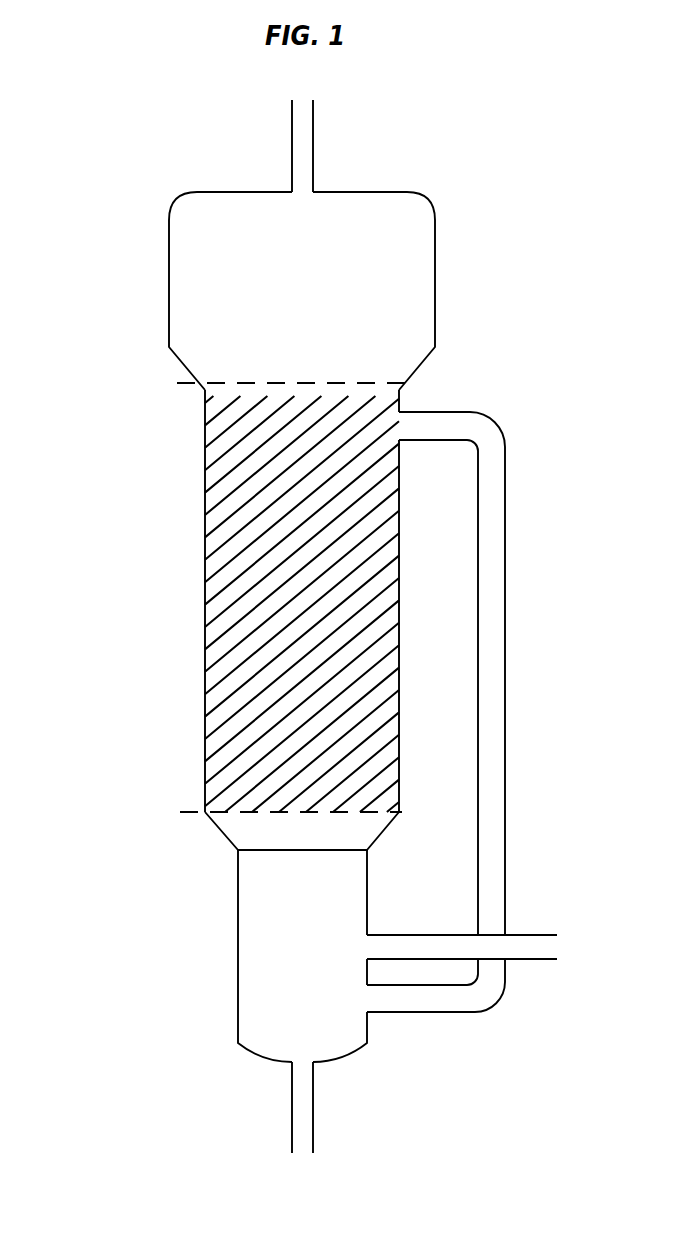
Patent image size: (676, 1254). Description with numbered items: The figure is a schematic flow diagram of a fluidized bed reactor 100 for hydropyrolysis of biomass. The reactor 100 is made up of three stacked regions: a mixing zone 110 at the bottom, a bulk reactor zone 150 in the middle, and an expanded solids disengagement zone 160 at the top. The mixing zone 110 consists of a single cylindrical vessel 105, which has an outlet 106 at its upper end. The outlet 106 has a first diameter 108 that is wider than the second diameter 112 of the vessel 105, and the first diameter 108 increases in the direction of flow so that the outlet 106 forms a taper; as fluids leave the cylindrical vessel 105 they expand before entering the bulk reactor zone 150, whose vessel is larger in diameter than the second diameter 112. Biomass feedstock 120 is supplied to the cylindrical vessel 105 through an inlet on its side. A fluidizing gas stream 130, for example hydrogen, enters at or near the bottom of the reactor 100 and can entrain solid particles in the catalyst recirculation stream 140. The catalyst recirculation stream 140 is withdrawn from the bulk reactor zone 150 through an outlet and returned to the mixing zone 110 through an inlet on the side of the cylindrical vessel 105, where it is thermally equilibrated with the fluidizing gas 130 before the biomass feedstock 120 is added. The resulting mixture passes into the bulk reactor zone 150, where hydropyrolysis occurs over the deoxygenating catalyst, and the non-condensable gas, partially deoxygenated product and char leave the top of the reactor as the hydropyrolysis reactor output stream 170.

The fluidized bed reactor 100 is at (112, 270).
The cylindrical vessel 105 is at (322, 924).
The outlet 106 is at (340, 850).
The first diameter 108 is at (227, 838).
The mixing zone 110 is at (173, 812).
The second diameter 112 is at (182, 1042).
The biomass feedstock 120 is at (530, 928).
The fluidizing gas stream 130 is at (313, 1130).
The catalyst recirculation stream 140 is at (505, 558).
The bulk reactor zone 150 is at (173, 382).
The expanded solids disengagement zone 160 is at (417, 285).
The hydropyrolysis reactor output stream 170 is at (315, 142).